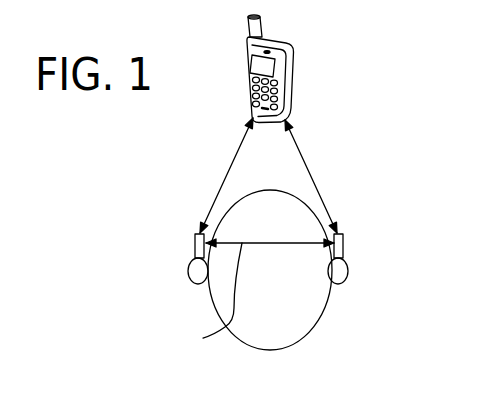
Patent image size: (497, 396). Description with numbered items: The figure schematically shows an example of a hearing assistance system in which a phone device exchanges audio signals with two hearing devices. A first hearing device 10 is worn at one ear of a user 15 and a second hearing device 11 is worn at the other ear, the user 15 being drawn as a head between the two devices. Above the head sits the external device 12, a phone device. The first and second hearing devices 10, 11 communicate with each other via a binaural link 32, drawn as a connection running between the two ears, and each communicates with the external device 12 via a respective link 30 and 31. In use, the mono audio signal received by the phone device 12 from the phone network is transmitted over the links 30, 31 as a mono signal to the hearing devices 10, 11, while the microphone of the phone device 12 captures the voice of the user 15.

The first hearing device 10 is at (198, 272).
The second hearing device 11 is at (340, 270).
The external device 12 is at (290, 77).
The user 15 is at (293, 315).
The link 30 is at (233, 150).
The link 31 is at (313, 187).
The binaural link 32 is at (225, 327).